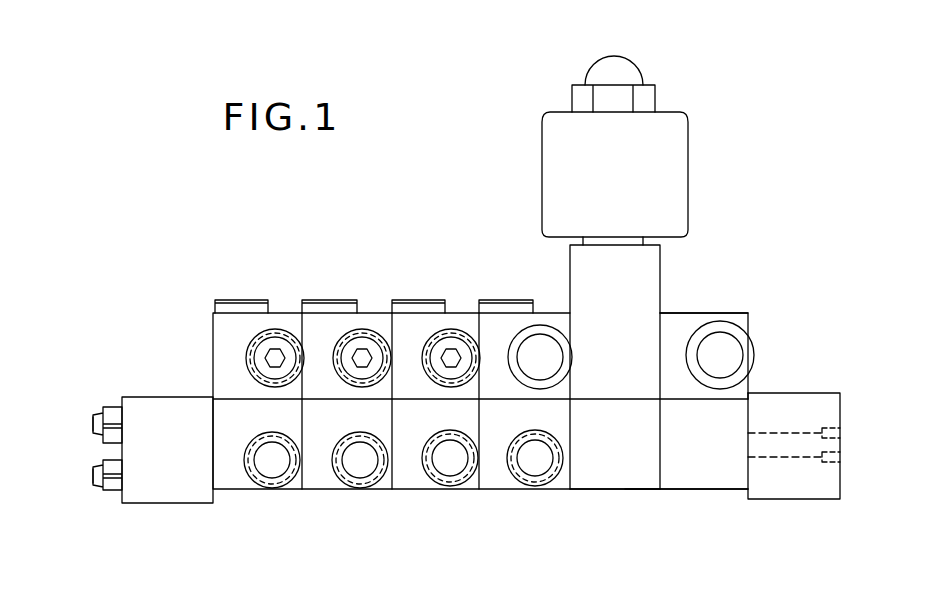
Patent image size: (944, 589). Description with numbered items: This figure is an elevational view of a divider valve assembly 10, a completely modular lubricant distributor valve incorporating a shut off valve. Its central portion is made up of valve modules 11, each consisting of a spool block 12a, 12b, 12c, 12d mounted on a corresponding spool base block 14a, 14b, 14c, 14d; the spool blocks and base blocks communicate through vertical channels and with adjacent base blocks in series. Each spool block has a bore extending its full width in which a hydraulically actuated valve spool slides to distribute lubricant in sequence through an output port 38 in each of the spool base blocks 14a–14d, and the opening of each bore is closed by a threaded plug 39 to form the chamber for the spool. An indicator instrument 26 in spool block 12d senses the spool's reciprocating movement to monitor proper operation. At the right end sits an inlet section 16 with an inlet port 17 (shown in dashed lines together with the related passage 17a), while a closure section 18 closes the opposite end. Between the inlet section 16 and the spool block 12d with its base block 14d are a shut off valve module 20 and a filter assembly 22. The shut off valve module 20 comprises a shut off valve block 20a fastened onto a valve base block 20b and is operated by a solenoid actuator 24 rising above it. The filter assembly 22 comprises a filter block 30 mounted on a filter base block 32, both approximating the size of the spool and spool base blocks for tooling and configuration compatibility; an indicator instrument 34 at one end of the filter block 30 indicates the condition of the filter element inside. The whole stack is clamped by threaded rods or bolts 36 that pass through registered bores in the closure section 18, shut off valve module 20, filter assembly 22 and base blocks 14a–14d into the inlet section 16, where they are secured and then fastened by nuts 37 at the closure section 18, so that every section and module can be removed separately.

The divider valve assembly 10 is at (316, 254).
The valve modules 11 is at (538, 319).
The spool block 12a is at (215, 362).
The spool block 12b is at (343, 325).
The spool block 12c is at (427, 327).
The spool block 12d is at (502, 327).
The spool base block 14a is at (240, 480).
The spool base block 14b is at (328, 480).
The spool base block 14c is at (418, 480).
The spool base block 14d is at (487, 477).
The inlet section 16 is at (783, 490).
The inlet port 17 is at (828, 453).
The passage 17a is at (783, 442).
The closure section 18 is at (160, 496).
The shut off valve module 20 is at (615, 452).
The shut off valve block 20a is at (647, 260).
The valve base block 20b is at (630, 473).
The filter assembly 22 is at (692, 468).
The solenoid actuator 24 is at (665, 122).
The indicator instrument 26 is at (552, 363).
The filter block 30 is at (678, 327).
The filter base block 32 is at (730, 420).
The indicator instrument 34 is at (722, 348).
The threaded rods or bolts 36 is at (92, 472).
The nuts 37 is at (108, 408).
The output port 38 is at (363, 452).
The threaded plug 39 is at (357, 343).